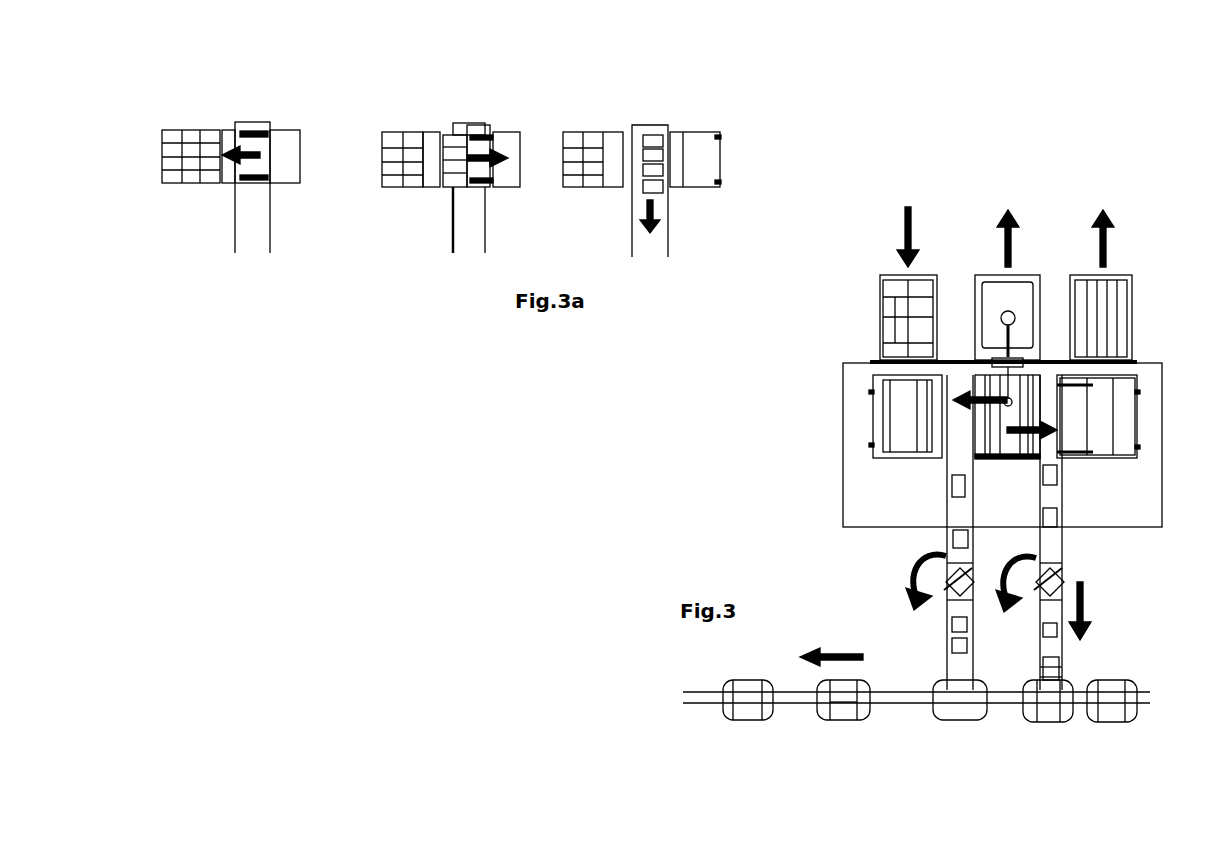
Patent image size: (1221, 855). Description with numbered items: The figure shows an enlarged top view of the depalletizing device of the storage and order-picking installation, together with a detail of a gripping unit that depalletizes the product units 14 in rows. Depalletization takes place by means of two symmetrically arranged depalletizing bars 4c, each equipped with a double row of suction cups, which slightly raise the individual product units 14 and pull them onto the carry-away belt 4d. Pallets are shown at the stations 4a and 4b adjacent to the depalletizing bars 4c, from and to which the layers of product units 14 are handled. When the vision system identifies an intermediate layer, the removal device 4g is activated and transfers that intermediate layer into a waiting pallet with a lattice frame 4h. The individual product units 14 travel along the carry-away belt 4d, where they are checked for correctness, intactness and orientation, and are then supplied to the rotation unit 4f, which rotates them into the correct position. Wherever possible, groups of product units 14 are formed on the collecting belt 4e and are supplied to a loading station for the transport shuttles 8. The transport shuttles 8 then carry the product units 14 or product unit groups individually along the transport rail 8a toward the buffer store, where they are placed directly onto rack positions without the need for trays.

In FIG. 3, the input station 4a is at (922, 285).
In FIG. 3, the output station 4b is at (1123, 285).
In FIG. 3A, the depalletizing bars 4c is at (227, 137).
In FIG. 3, the depalletizing bars 4c is at (933, 427).
In FIG. 3, the carry-away belt 4d is at (957, 515).
In FIG. 3, the collecting belt 4e is at (960, 662).
In FIG. 3, the rotation unit 4f is at (957, 582).
In FIG. 3, the removal device 4g is at (1013, 338).
In FIG. 3, the pallet with a lattice frame 4h is at (1013, 292).
In FIG. 3, the transport shuttles 8 is at (823, 710).
In FIG. 3, the transport rail 8a is at (905, 698).
In FIG. 3, the product units 14 is at (748, 698).